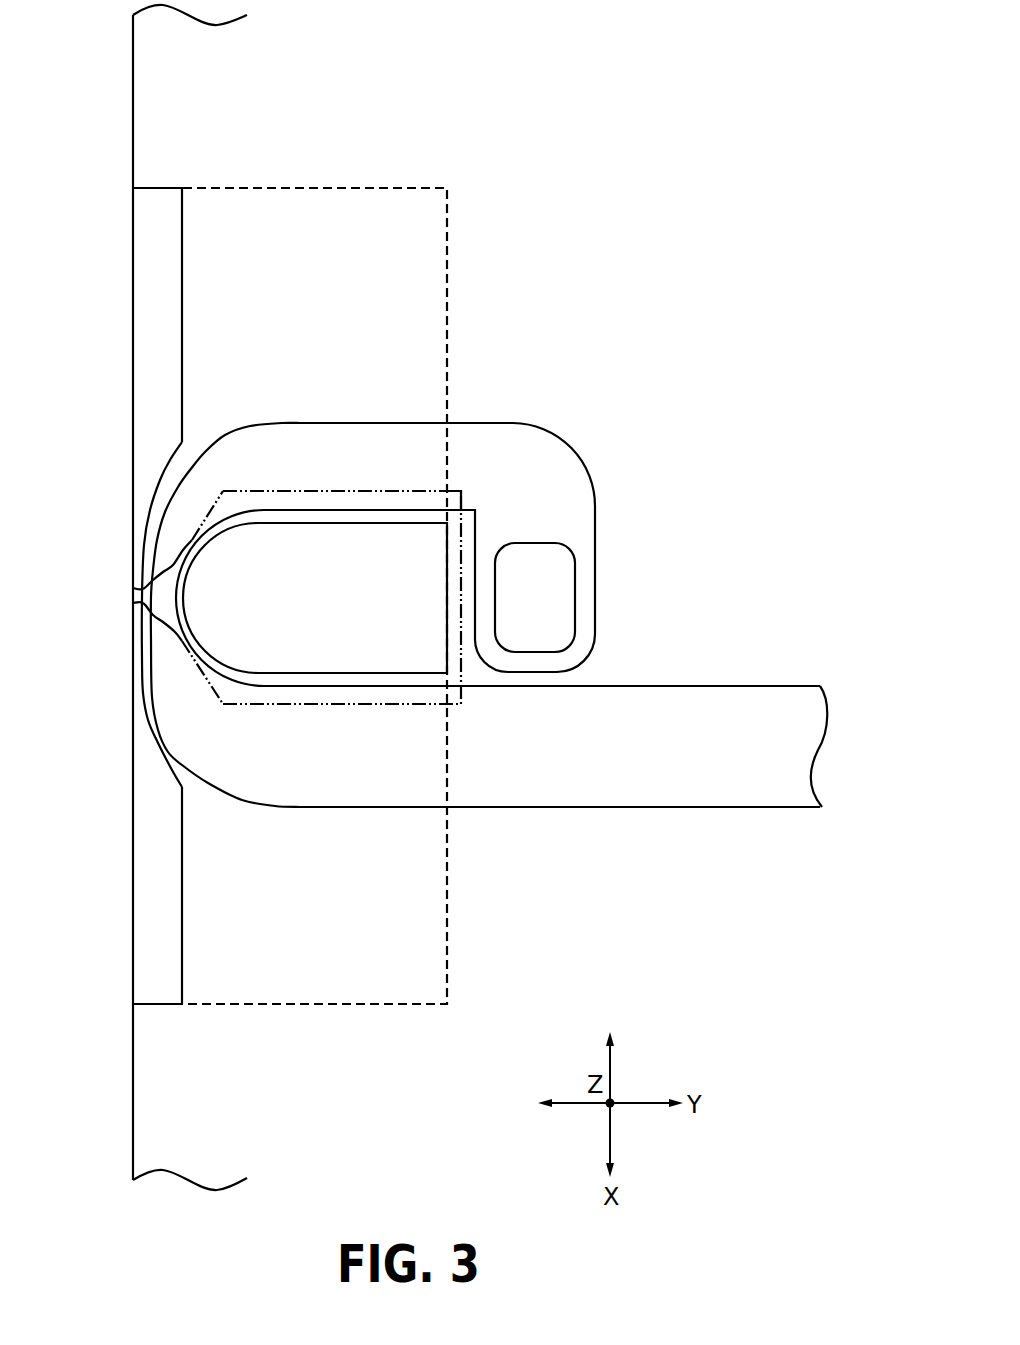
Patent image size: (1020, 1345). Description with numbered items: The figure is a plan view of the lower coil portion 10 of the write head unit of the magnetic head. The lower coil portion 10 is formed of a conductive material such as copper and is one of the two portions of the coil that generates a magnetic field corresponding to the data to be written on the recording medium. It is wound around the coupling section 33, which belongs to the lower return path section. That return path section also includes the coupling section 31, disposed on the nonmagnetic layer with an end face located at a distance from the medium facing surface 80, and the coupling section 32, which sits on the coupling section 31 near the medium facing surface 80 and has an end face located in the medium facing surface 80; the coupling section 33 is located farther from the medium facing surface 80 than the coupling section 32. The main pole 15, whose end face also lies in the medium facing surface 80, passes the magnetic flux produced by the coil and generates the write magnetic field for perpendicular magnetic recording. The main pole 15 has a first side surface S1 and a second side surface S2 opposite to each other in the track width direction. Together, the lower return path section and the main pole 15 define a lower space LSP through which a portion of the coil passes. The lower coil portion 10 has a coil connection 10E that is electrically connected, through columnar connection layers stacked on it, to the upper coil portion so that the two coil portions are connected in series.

The medium facing surface 80 is at (124, 52).
The coupling section 32 is at (166, 193).
The coupling section 31 is at (334, 188).
The lower coil portion 10 is at (483, 415).
The coil connection 10E is at (567, 600).
The coupling section 33 is at (365, 532).
The main pole 15 is at (308, 480).
The first side surface S1 is at (210, 500).
The second side surface S2 is at (208, 695).
The lower space LSP is at (141, 530).